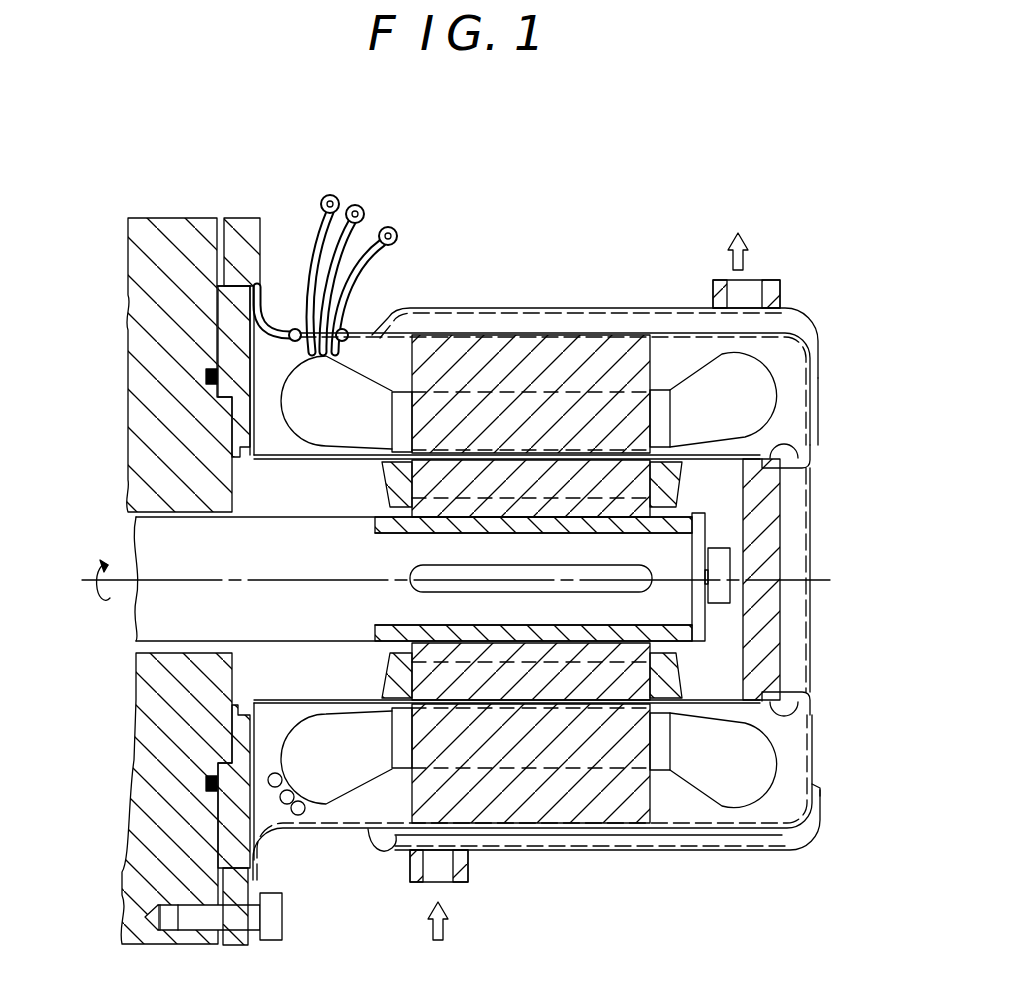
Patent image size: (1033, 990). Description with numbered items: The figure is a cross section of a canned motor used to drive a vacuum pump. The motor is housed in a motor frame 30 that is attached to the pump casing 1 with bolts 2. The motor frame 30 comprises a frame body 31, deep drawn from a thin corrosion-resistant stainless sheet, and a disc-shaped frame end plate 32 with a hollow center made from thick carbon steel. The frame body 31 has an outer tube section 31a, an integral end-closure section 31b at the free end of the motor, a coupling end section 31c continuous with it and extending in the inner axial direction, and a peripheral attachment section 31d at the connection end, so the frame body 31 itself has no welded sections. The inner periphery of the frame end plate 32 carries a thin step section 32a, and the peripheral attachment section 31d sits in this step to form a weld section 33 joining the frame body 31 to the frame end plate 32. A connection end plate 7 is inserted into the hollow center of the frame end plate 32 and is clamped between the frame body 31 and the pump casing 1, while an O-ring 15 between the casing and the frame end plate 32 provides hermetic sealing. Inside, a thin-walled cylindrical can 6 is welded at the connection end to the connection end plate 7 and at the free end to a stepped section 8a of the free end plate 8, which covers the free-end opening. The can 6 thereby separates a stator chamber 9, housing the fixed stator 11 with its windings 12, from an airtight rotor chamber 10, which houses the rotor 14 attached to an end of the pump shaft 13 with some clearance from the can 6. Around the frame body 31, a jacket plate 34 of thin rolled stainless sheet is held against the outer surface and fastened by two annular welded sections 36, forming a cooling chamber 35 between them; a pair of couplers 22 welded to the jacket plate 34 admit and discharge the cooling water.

The pump casing 1 is at (178, 240).
The bolts 2 is at (276, 918).
The can 6 is at (319, 461).
The connection end plate 7 is at (233, 349).
The free end plate 8 is at (816, 587).
The stepped section 8a is at (812, 708).
The stator chamber 9 is at (581, 521).
The rotor chamber 10 is at (465, 698).
The stator 11 is at (546, 348).
The windings 12 is at (760, 405).
The pump shaft 13 is at (137, 618).
The rotor 14 is at (598, 680).
The O-ring 15 is at (208, 781).
The couplers 22 is at (782, 300).
The motor frame 30 is at (400, 283).
The frame body 31 is at (578, 550).
The outer tube section 31a is at (467, 330).
The end-closure section 31b is at (814, 752).
The coupling end section 31c is at (808, 458).
The peripheral attachment section 31d is at (256, 868).
The frame end plate 32 is at (235, 278).
The thin step section 32a is at (260, 292).
The weld section 33 is at (255, 878).
The jacket plate 34 is at (607, 307).
The cooling chamber 35 is at (528, 840).
The annular welded sections 36 is at (815, 782).